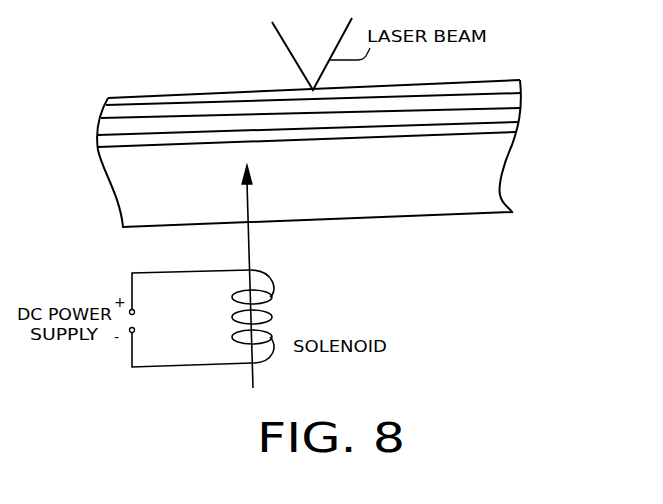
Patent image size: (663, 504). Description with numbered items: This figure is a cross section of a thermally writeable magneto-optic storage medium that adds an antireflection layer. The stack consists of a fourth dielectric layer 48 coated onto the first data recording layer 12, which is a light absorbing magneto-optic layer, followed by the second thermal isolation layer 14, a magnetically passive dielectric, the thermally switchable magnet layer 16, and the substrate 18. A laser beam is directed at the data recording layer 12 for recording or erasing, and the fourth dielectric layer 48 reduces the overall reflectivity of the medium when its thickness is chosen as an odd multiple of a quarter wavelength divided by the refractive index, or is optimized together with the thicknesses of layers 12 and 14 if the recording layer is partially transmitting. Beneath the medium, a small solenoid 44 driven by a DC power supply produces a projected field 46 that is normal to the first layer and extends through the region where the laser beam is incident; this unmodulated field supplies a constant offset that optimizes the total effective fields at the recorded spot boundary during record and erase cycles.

The fourth dielectric layer 48 is at (518, 80).
The first data recording layer 12 is at (515, 97).
The second thermal isolation layer 14 is at (515, 110).
The thermally switchable magnet layer 16 is at (512, 127).
The substrate 18 is at (498, 163).
The projected field 46 is at (250, 250).
The solenoid 44 is at (272, 312).